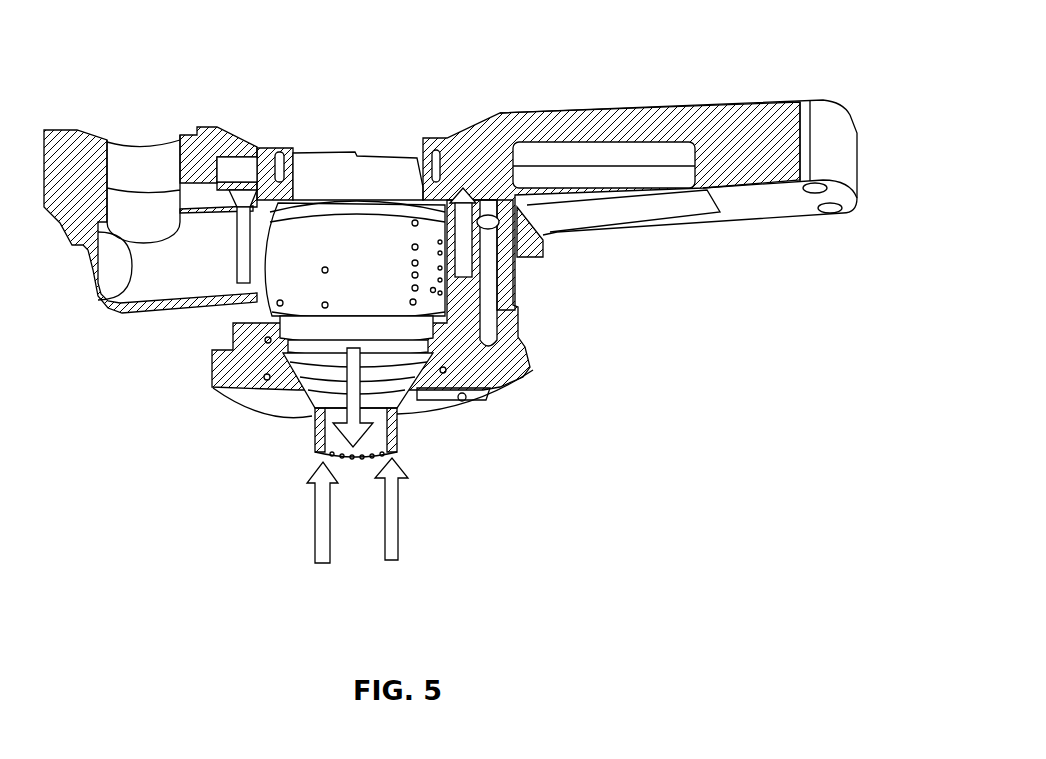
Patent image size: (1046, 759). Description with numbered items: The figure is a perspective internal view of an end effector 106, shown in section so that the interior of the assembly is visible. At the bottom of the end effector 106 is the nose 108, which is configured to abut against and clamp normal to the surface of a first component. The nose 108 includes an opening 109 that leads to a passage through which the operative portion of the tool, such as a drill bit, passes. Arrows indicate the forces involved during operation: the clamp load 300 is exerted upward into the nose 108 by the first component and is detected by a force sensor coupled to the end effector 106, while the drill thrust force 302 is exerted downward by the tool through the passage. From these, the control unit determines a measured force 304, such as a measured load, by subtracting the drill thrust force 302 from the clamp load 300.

The end effector 106 is at (866, 82).
The nose 108 is at (525, 378).
The opening 109 is at (372, 463).
The clamp load 300 is at (330, 553).
The drill thrust force 302 is at (316, 412).
The measured force 304 is at (243, 205).